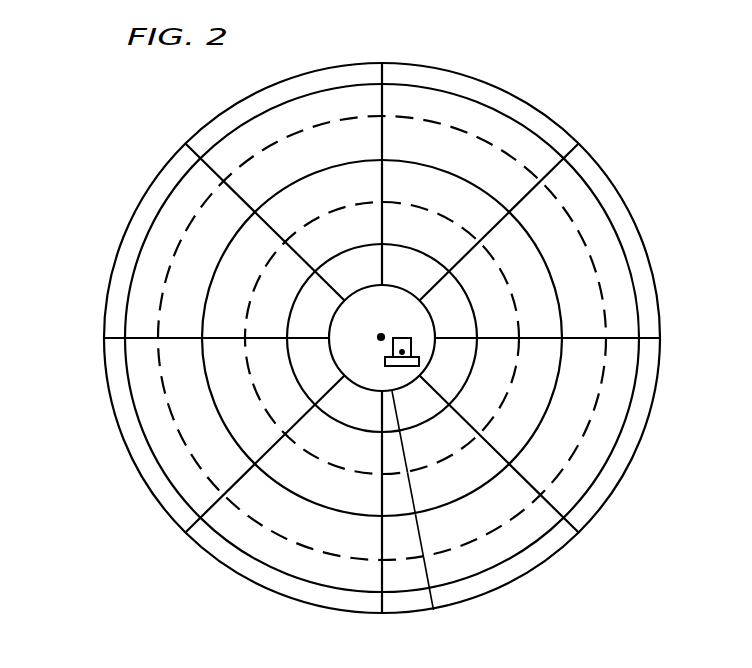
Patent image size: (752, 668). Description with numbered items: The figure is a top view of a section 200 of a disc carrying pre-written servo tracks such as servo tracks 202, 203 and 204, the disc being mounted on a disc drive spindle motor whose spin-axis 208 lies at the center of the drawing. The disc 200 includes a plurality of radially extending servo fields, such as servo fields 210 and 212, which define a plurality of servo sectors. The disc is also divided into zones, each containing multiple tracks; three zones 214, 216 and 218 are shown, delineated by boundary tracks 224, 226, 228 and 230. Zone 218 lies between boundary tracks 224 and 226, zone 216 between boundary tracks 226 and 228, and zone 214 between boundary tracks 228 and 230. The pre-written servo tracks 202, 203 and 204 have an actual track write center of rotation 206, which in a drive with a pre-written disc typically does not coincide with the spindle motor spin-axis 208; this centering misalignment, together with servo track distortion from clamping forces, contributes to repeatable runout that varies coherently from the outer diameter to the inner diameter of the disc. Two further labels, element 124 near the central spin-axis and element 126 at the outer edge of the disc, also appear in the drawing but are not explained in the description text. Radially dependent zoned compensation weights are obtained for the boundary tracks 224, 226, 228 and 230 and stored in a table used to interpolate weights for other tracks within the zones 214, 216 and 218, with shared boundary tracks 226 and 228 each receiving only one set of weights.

The section of a disc 200 is at (101, 179).
The boundary track 230 is at (508, 83).
The outer boundary 126 is at (112, 268).
The pre-written servo track 202 is at (137, 413).
The boundary track 228 is at (600, 387).
The pre-written servo track 203 is at (223, 427).
The boundary track 226 is at (510, 387).
The pre-written servo track 204 is at (355, 432).
The boundary track 224 is at (358, 274).
The central circle boundary 124 is at (398, 287).
The servo field 212 is at (650, 333).
The servo field 210 is at (580, 150).
The zone 218 is at (400, 412).
The zone 216 is at (413, 497).
The zone 214 is at (430, 575).
The track write center of rotation 206 is at (380, 342).
The spin-axis 208 is at (395, 338).